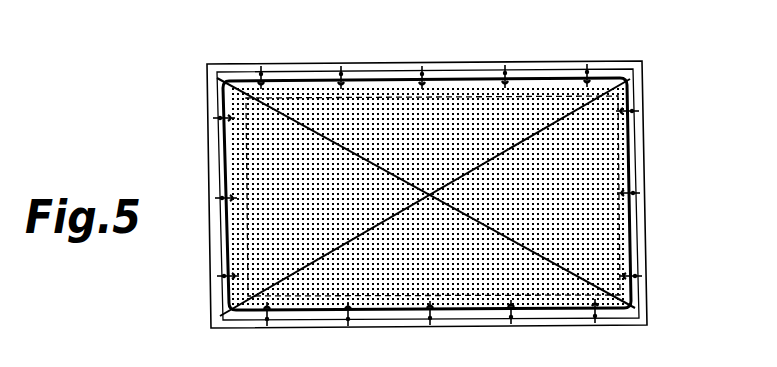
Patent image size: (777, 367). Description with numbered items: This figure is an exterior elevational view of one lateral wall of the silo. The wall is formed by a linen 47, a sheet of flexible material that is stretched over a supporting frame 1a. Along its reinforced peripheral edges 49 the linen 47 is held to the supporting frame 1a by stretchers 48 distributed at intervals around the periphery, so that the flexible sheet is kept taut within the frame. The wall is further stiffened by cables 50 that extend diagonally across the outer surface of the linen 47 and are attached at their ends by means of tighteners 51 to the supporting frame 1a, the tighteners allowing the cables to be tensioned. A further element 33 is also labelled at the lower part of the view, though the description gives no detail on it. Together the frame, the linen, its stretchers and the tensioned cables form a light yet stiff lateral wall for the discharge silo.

The supporting frame 1a is at (633, 222).
The linen 47 is at (265, 175).
The stretchers 48 is at (490, 72).
The reinforced peripheral edges 49 is at (608, 168).
The cables 50 is at (280, 267).
The tighteners 51 is at (620, 303).
The frame member 33 is at (254, 365).